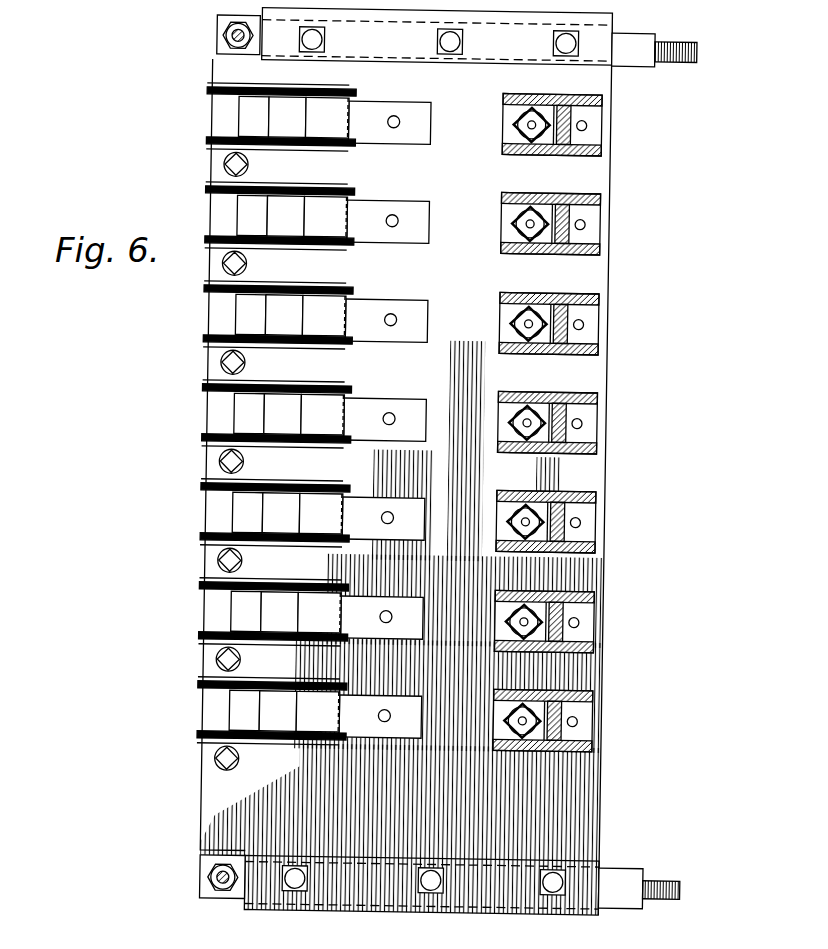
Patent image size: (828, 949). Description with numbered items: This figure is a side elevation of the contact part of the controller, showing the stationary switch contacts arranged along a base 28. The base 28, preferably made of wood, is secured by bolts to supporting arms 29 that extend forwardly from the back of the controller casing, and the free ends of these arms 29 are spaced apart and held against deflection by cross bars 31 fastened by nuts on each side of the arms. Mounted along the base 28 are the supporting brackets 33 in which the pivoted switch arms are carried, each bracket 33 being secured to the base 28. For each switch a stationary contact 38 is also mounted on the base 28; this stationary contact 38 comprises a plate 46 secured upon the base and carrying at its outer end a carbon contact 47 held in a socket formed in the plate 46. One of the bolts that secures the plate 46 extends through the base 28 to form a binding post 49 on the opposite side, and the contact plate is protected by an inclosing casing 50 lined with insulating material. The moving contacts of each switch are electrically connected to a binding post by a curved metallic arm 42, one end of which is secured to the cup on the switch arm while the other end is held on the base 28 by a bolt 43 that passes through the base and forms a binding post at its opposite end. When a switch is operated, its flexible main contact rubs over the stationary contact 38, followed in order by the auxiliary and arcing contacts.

The base 28 is at (596, 282).
The supporting arm 29 is at (648, 54).
The cross bar 31 is at (224, 43).
The supporting bracket 33 is at (598, 151).
The stationary contact 38 is at (254, 122).
The curved metallic arm 42 is at (578, 136).
The bolt 43 is at (532, 122).
The plate 46 is at (398, 118).
The carbon contact 47 is at (300, 105).
The binding post 49 is at (436, 101).
The inclosing casing 50 is at (226, 256).